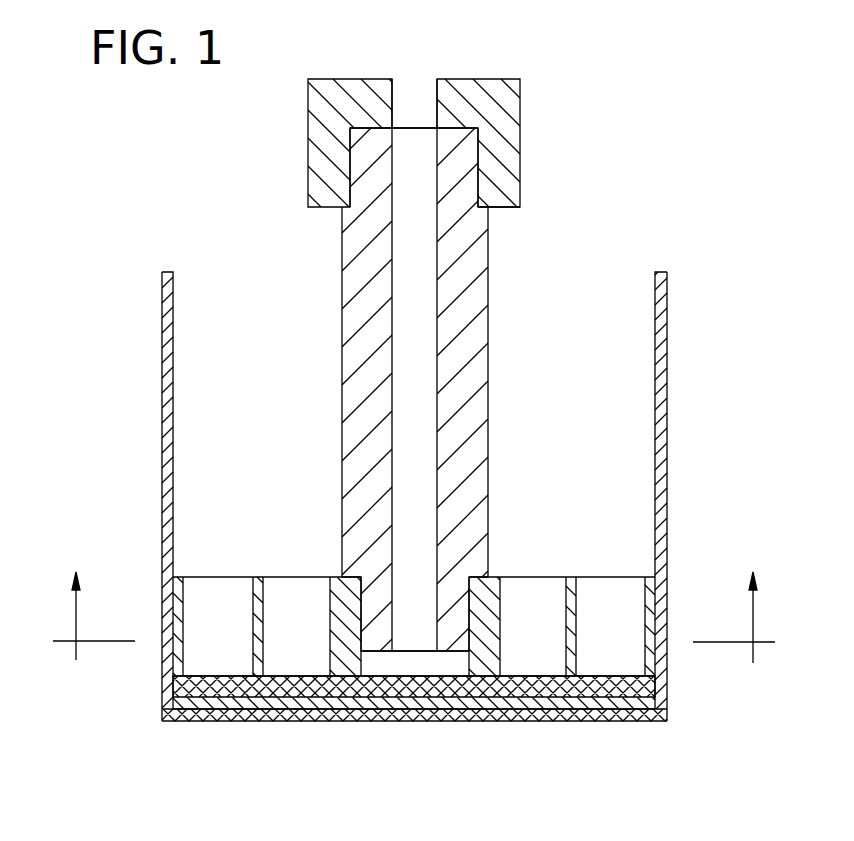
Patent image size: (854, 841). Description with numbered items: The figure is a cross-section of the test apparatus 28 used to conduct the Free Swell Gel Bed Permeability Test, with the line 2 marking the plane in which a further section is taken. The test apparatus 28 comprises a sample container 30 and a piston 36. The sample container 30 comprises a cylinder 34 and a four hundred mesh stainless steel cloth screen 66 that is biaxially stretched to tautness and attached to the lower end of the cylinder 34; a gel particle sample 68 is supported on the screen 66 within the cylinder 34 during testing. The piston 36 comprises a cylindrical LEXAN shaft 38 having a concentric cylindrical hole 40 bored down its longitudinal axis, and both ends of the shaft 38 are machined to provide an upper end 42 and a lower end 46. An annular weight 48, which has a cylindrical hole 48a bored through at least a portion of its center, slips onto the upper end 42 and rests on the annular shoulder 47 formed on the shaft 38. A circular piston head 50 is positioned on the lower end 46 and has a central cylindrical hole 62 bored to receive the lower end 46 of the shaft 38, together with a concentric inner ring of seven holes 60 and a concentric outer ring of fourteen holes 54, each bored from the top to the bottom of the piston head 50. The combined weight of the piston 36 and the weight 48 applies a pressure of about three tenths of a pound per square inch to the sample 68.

The section line 2- 2 is at (407, 624).
The test apparatus 28 is at (613, 217).
The sample container 30 is at (162, 422).
The cylinder 34 is at (668, 482).
The piston 36 is at (520, 477).
The cylindrical LEXAN shaft 38 is at (340, 435).
The cylindrical hole 40 is at (437, 240).
The upper end 42 is at (372, 188).
The lower end 46 is at (462, 653).
The annular shoulder 47 is at (478, 203).
The weight 48 is at (309, 137).
The cylindrical hole 48a is at (437, 103).
The piston head 50 is at (653, 591).
The holes 54 is at (188, 650).
The holes 60 is at (263, 610).
The cylindrical hole 62 is at (362, 665).
The stainless steel cloth screen 66 is at (392, 710).
The gel particle sample 68 is at (275, 707).